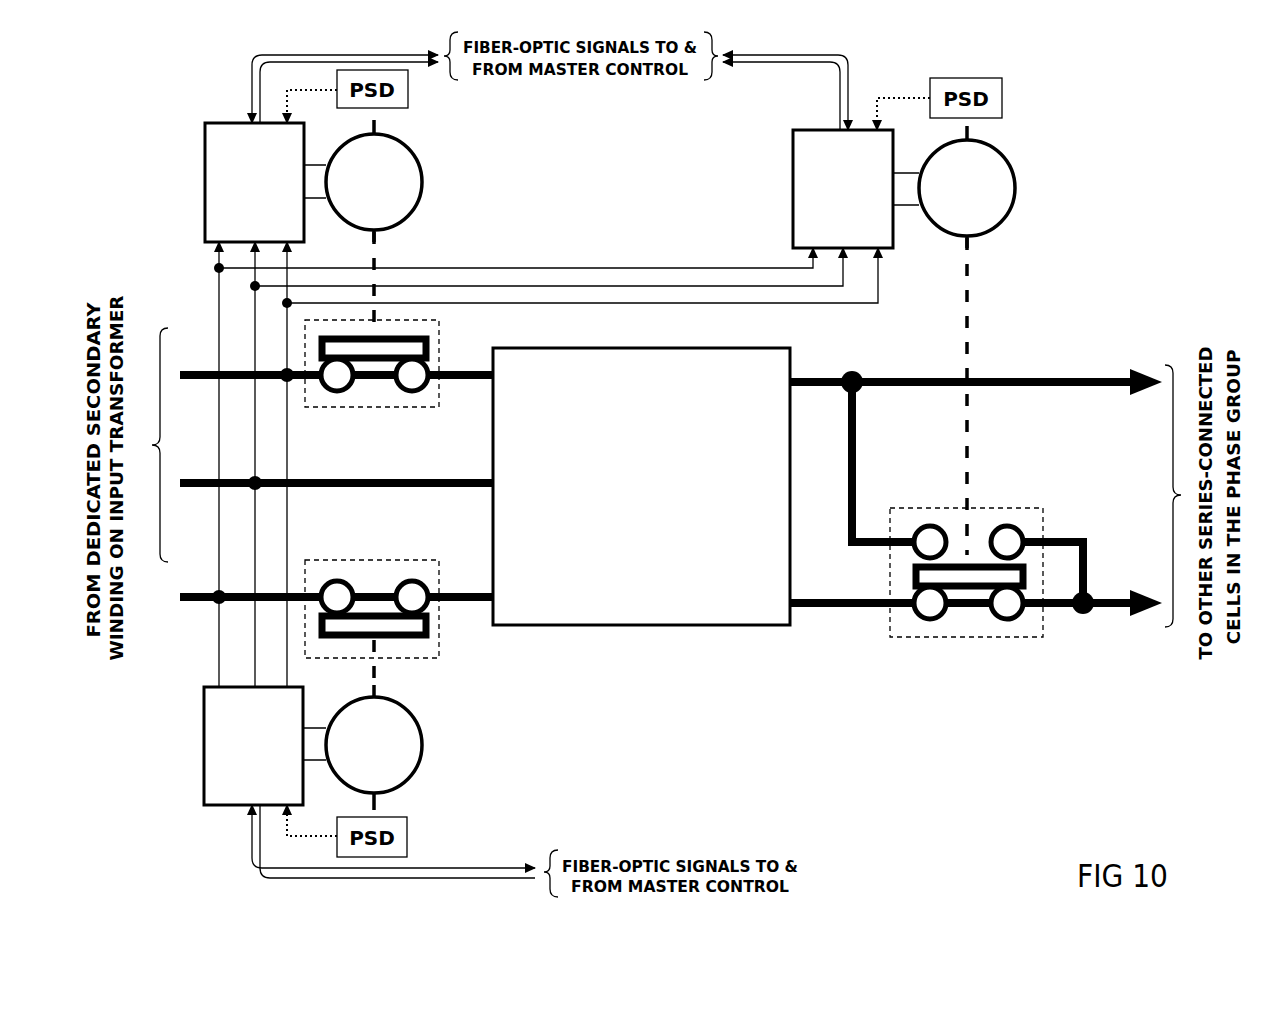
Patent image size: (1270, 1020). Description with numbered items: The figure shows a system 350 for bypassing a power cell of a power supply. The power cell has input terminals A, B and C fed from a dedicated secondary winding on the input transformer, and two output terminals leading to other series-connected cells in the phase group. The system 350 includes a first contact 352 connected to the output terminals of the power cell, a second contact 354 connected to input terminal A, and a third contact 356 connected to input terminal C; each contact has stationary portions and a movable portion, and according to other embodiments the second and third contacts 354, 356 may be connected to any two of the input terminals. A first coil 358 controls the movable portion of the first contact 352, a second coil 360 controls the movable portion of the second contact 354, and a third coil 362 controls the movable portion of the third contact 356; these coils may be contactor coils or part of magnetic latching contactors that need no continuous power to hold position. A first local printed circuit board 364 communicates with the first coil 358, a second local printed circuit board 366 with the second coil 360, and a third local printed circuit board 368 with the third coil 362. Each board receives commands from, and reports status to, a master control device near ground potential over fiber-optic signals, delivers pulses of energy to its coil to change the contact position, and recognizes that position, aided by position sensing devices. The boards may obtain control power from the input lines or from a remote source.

The system for bypassing a power cell 350 is at (1100, 80).
The first contact 352 is at (937, 637).
The second contact 354 is at (322, 407).
The third contact 356 is at (330, 560).
The first coil 358 is at (1016, 200).
The second coil 360 is at (424, 188).
The third coil 362 is at (424, 748).
The first local printed circuit board 364 is at (793, 184).
The second local printed circuit board 366 is at (205, 178).
The third local printed circuit board 368 is at (204, 745).